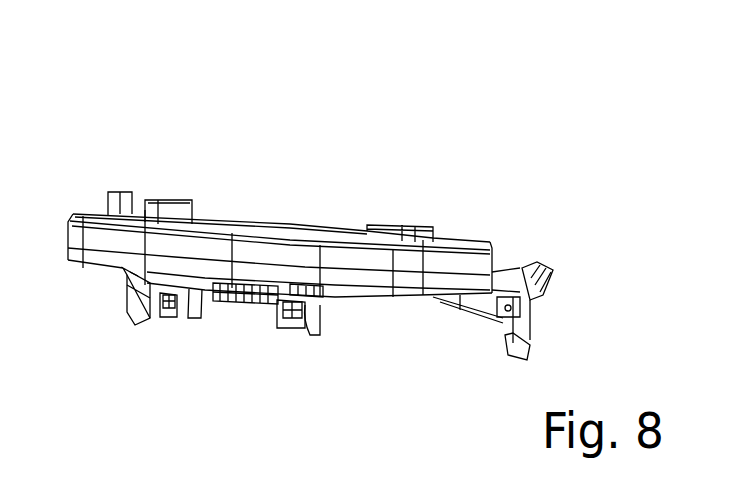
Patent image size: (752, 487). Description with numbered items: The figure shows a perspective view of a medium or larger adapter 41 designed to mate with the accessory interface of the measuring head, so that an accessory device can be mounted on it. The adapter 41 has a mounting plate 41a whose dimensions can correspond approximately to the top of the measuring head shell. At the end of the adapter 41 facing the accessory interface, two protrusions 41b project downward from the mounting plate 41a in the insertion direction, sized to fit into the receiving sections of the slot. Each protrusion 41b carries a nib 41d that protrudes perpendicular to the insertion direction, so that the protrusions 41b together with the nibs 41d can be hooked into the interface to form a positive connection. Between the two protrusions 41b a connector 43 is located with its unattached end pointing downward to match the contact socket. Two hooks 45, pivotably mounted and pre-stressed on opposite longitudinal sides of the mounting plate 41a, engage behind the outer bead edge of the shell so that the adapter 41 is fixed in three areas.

The adapter 41 is at (455, 180).
The mounting plate 41a is at (258, 225).
The protrusions 41b is at (193, 300).
The nib 41d is at (160, 300).
The connector 43 is at (243, 292).
The hooks 45 is at (137, 311).